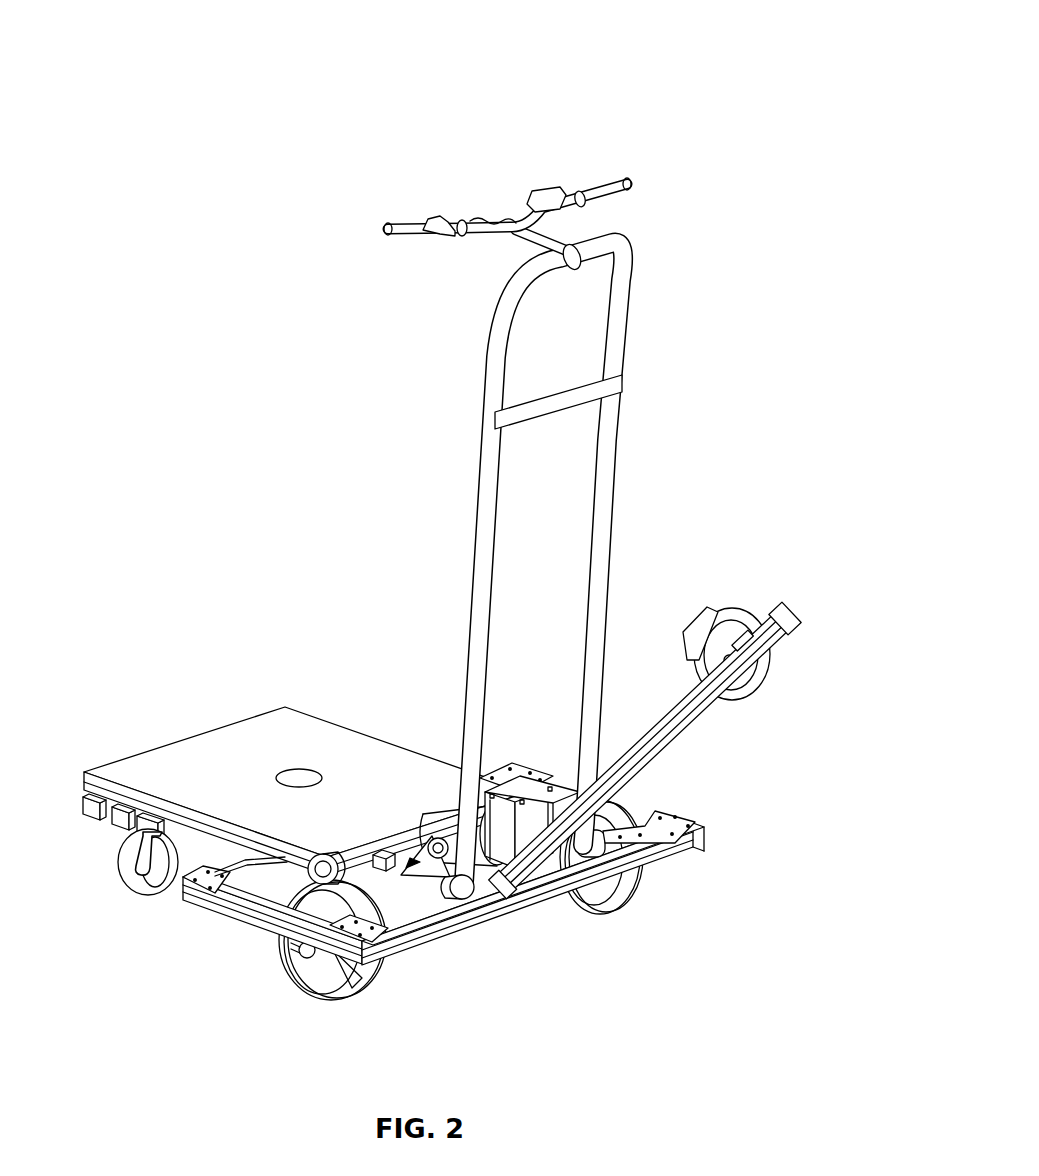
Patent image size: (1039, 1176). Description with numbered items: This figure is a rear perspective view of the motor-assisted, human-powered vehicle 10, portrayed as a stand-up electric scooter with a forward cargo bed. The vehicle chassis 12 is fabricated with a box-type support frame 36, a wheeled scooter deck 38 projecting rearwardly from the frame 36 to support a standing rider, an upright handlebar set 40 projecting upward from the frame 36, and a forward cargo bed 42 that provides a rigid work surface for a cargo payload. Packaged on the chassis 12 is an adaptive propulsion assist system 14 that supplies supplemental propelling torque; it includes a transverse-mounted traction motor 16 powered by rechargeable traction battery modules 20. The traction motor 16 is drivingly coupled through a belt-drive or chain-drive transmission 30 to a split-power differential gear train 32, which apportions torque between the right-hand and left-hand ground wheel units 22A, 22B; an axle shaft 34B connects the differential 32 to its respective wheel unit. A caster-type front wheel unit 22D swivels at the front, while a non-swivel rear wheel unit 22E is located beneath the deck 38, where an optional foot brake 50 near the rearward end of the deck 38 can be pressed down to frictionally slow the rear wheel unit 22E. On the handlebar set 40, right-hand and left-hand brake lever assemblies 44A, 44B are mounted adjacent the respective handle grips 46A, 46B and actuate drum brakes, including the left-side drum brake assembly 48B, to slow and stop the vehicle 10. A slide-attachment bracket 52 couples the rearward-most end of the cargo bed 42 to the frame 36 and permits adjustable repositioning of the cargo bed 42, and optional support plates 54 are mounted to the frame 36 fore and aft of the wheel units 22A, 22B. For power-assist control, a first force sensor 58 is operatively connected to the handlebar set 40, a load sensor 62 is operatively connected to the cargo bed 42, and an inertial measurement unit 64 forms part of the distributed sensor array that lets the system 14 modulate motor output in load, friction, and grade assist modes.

The motor-assisted, human-powered vehicle 10 is at (201, 86).
The vehicle chassis 12 is at (469, 877).
The adaptive propulsion assist system 14 is at (530, 701).
The traction motor 16 is at (483, 773).
The traction battery modules 20 is at (552, 797).
The right-hand ground wheel unit 22A is at (625, 890).
The left-hand ground wheel unit 22B is at (319, 973).
The caster-type front wheel unit 22D is at (135, 885).
The rear wheel unit 22E is at (762, 680).
The belt-drive or chain-drive transmission 30 is at (430, 838).
The split-power differential gear train 32 is at (422, 910).
The axle shaft 34B is at (300, 947).
The box-type support frame 36 is at (232, 907).
The wheeled scooter deck 38 is at (667, 700).
The upright handlebar set 40 is at (612, 437).
The forward cargo bed 42 is at (160, 757).
The right-hand brake lever assembly 44A is at (535, 195).
The left-hand brake lever assembly 44B is at (443, 219).
The handle grip 46A is at (616, 180).
The handle grip 46B is at (426, 232).
The drum brake assembly 48B is at (340, 965).
The foot brake 50 is at (689, 610).
The slide-attachment bracket 52 is at (402, 842).
The support plates 54 is at (673, 820).
The first force sensor 58 is at (470, 893).
The load sensor 62 is at (283, 772).
The inertial measurement unit 64 is at (380, 853).